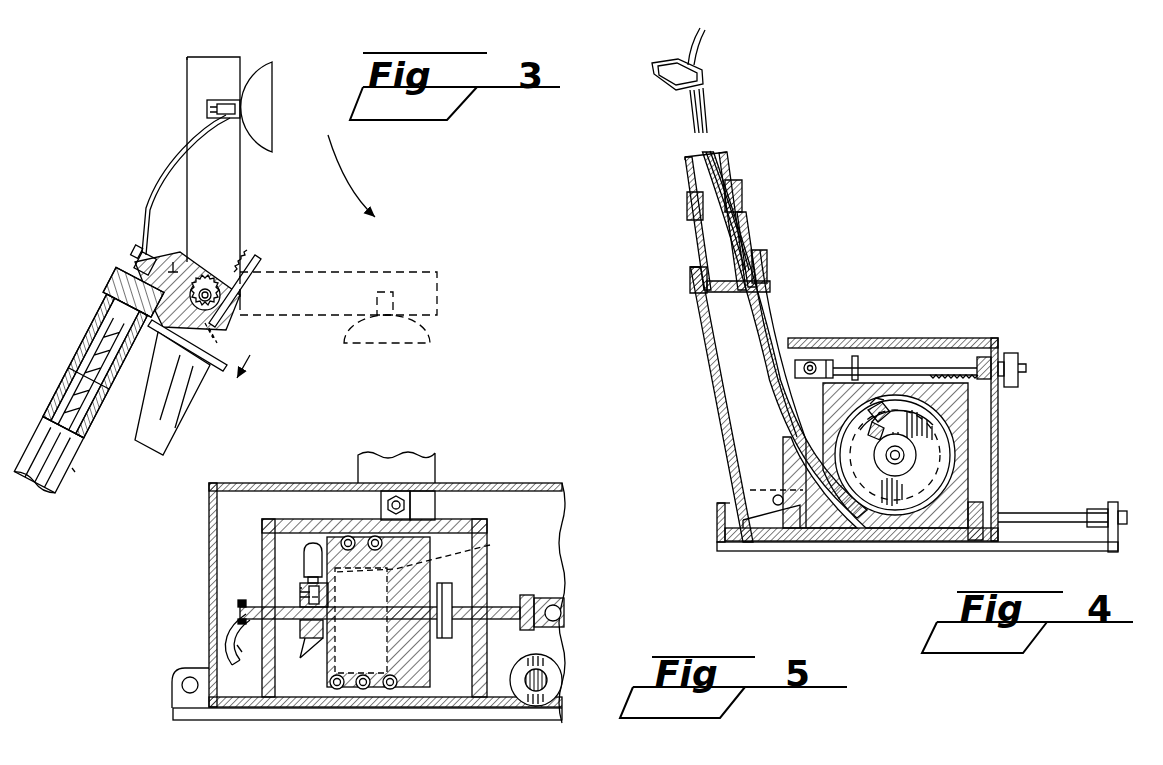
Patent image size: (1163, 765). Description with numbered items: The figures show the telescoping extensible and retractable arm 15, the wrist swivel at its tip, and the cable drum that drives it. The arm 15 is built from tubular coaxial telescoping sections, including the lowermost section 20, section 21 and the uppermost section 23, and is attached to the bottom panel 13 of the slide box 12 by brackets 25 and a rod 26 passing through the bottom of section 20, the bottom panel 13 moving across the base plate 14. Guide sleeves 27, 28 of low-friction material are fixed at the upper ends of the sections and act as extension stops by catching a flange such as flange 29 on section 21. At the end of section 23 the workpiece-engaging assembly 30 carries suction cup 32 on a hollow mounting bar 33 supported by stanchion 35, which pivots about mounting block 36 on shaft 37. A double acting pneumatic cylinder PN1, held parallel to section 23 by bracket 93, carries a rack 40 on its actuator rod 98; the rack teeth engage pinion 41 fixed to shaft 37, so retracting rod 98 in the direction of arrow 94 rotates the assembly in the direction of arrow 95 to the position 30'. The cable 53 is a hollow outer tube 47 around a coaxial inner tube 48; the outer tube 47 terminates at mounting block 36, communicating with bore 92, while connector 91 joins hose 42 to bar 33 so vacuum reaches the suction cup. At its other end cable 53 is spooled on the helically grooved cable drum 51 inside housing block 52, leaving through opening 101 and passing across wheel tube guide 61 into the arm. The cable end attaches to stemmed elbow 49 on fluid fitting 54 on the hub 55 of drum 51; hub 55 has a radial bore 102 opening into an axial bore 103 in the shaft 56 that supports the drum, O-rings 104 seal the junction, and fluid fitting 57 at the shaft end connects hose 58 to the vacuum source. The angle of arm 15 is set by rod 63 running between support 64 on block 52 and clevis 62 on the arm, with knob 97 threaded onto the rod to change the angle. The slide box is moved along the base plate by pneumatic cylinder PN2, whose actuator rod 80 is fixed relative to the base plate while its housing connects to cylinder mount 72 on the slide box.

In FIG. 4, the slide box 12 is at (997, 340).
In FIG. 5, the bottom panel 13 is at (562, 703).
In FIG. 4, the bottom panel 13 is at (813, 541).
In FIG. 5, the base plate 14 is at (556, 720).
In FIG. 4, the base plate 14 is at (877, 551).
In FIG. 3, the telescoping extensible and retractable arm 15 is at (75, 472).
In FIG. 4, the telescoping extensible and retractable arm 15 is at (770, 187).
In FIG. 5, the lowermost telescoping section 20 is at (437, 470).
In FIG. 4, the lowermost telescoping section 20 is at (773, 285).
In FIG. 4, the telescoping section 21 is at (697, 233).
In FIG. 3, the uppermost telescoping section 23 is at (50, 432).
In FIG. 4, the brackets 25 is at (777, 528).
In FIG. 4, the rod 26 is at (773, 500).
In FIG. 4, the guide sleeve 27 is at (762, 252).
In FIG. 4, the guide sleeve 28 is at (730, 182).
In FIG. 4, the flange 29 is at (715, 307).
In FIG. 3, the workpiece-engaging assembly 30 is at (147, 57).
In FIG. 3, the new position of workpiece-engaging assembly 30' is at (366, 272).
In FIG. 3, the suction cup 32 is at (263, 97).
In FIG. 3, the mounting bar 33 is at (217, 100).
In FIG. 3, the stanchion 35 is at (212, 57).
In FIG. 3, the mounting block 36 is at (115, 295).
In FIG. 3, the shaft 37 is at (208, 288).
In FIG. 3, the rack 40 is at (257, 256).
In FIG. 3, the pinion 41 is at (173, 262).
In FIG. 3, the hose 42 is at (167, 170).
In FIG. 3, the outer tube 47 is at (80, 387).
In FIG. 3, the inner tube 48 is at (113, 288).
In FIG. 5, the stemmed elbow 49 is at (303, 553).
In FIG. 4, the stemmed elbow 49 is at (875, 415).
In FIG. 5, the cable drum 51 is at (453, 665).
In FIG. 4, the cable drum 51 is at (948, 445).
In FIG. 5, the housing block 52 is at (462, 520).
In FIG. 4, the housing block 52 is at (965, 390).
In FIG. 3, the cable 53 is at (93, 413).
In FIG. 5, the cable 53 is at (343, 530).
In FIG. 4, the cable 53 is at (773, 310).
In FIG. 5, the fluid fitting 54 is at (297, 593).
In FIG. 4, the fluid fitting 54 is at (913, 425).
In FIG. 5, the hub 55 is at (312, 597).
In FIG. 4, the hub 55 is at (918, 462).
In FIG. 5, the shaft 56 is at (503, 605).
In FIG. 5, the fluid fitting 57 is at (237, 599).
In FIG. 5, the hose 58 is at (230, 633).
In FIG. 4, the wheel tube guide 61 is at (803, 340).
In FIG. 4, the clevis 62 is at (860, 352).
In FIG. 4, the rod 63 is at (937, 367).
In FIG. 4, the support 64 is at (880, 405).
In FIG. 5, the cylinder mount 72 is at (540, 605).
In FIG. 4, the actuator rod 80 is at (1063, 520).
In FIG. 3, the connector 91 is at (136, 258).
In FIG. 3, the bore 92 is at (135, 276).
In FIG. 3, the bracket 93 is at (225, 370).
In FIG. 3, the arrow 94 is at (253, 362).
In FIG. 3, the arrow 95 is at (365, 180).
In FIG. 4, the knob 97 is at (1018, 358).
In FIG. 3, the actuator rod 98 is at (215, 337).
In FIG. 5, the opening 101 is at (492, 547).
In FIG. 4, the opening 101 is at (783, 447).
In FIG. 5, the radial bore 102 is at (297, 587).
In FIG. 5, the axial bore 103 is at (237, 645).
In FIG. 5, the O-rings 104 is at (302, 654).
In FIG. 3, the double acting pneumatic cylinder PN1 is at (175, 412).
In FIG. 5, the double acting pneumatic cylinder PN2 is at (548, 660).